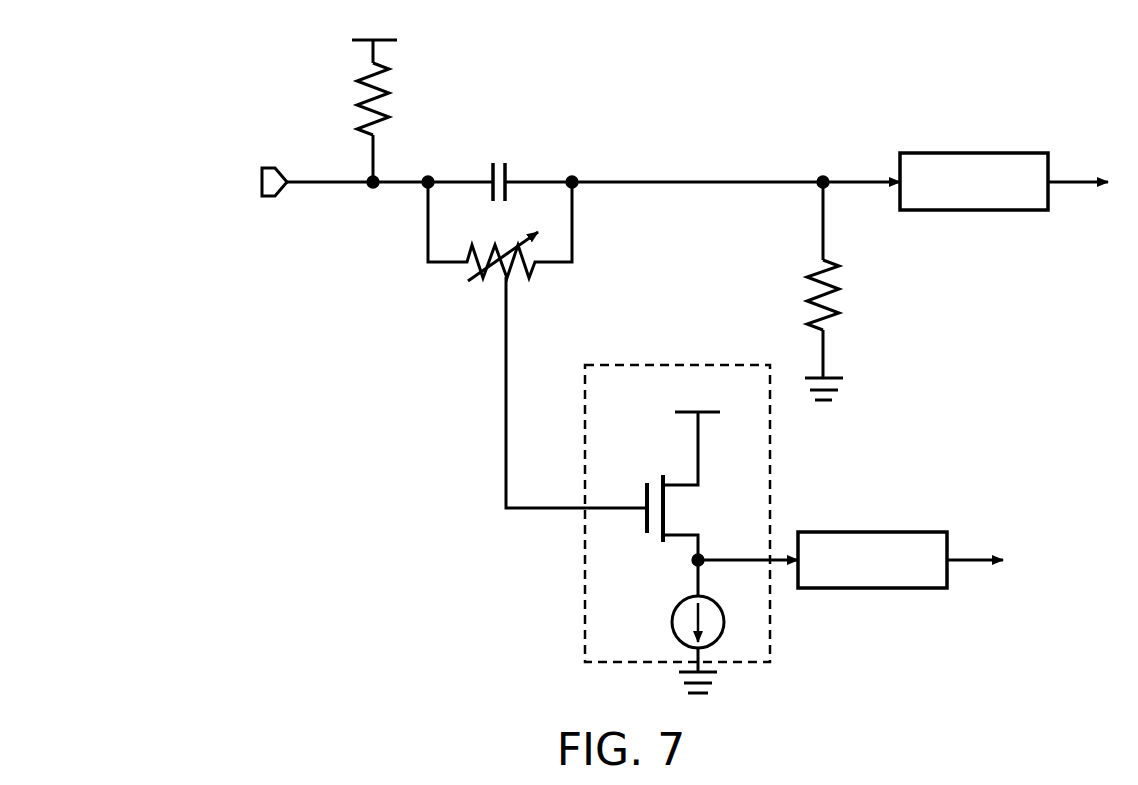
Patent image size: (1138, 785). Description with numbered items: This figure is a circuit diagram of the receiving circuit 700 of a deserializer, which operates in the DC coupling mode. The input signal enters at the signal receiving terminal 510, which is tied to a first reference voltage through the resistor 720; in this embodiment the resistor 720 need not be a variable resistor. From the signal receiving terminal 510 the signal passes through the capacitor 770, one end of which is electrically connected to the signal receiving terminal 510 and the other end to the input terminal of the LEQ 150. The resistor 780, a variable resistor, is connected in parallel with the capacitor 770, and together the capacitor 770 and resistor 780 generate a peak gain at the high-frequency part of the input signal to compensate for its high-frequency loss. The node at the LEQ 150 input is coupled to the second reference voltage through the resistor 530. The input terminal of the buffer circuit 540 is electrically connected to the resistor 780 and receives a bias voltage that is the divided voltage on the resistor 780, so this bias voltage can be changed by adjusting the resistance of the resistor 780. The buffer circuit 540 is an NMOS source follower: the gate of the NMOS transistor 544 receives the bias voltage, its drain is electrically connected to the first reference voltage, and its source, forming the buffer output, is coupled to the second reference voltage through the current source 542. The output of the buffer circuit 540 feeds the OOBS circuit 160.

The receiving circuit 700 is at (50, 89).
The resistor 720 is at (360, 73).
The signal receiving terminal 510 is at (373, 188).
The capacitor 770 is at (492, 157).
The resistor 780 is at (478, 282).
The LEQ 150 is at (955, 152).
The resistor 530 is at (806, 281).
The buffer circuit 540 is at (642, 365).
The NMOS transistor 544 is at (651, 476).
The current source 542 is at (672, 622).
The OOBS circuit 160 is at (879, 531).